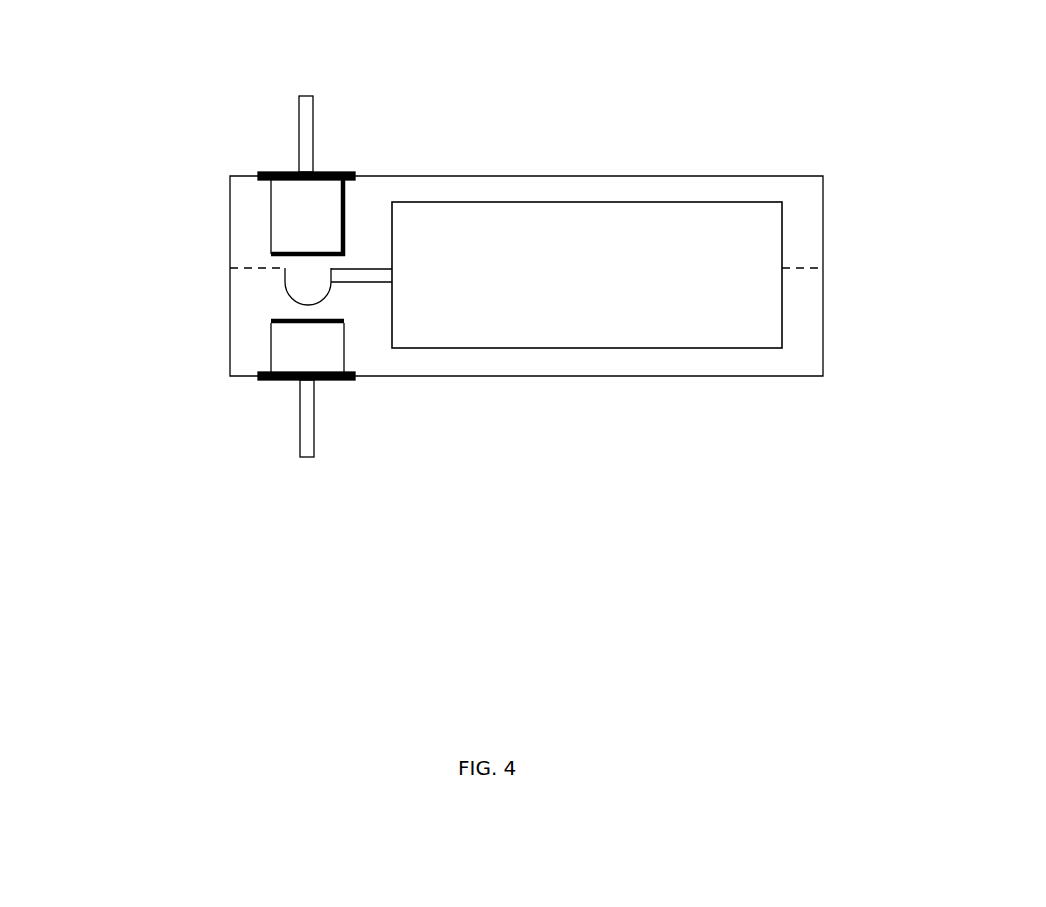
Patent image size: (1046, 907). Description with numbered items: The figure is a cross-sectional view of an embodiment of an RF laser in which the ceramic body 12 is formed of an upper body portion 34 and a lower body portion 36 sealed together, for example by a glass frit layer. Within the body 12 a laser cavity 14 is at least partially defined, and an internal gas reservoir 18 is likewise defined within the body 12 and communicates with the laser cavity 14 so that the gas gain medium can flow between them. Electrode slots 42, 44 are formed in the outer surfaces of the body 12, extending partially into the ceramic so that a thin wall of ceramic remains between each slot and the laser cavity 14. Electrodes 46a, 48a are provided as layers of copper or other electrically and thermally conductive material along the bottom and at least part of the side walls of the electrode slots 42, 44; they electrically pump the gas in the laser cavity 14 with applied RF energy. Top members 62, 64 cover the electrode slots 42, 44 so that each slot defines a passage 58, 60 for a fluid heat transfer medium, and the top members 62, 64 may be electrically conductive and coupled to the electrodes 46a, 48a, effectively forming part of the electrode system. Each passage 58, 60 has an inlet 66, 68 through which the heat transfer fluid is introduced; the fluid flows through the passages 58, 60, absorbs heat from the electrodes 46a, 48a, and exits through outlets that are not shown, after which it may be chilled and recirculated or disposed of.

The body 12 is at (816, 141).
The laser cavity 14 is at (300, 292).
The internal gas reservoir 18 is at (580, 222).
The upper body portion 34 is at (823, 222).
The lower body portion 36 is at (823, 311).
The electrode slot 42 is at (270, 222).
The electrode slot 44 is at (342, 338).
The electrode 46a is at (345, 222).
The electrode 48a is at (270, 353).
The passage 58 is at (300, 210).
The passage 60 is at (310, 352).
The top member 62 is at (280, 172).
The top member 64 is at (270, 380).
The inlet 66 is at (312, 92).
The inlet 68 is at (310, 457).